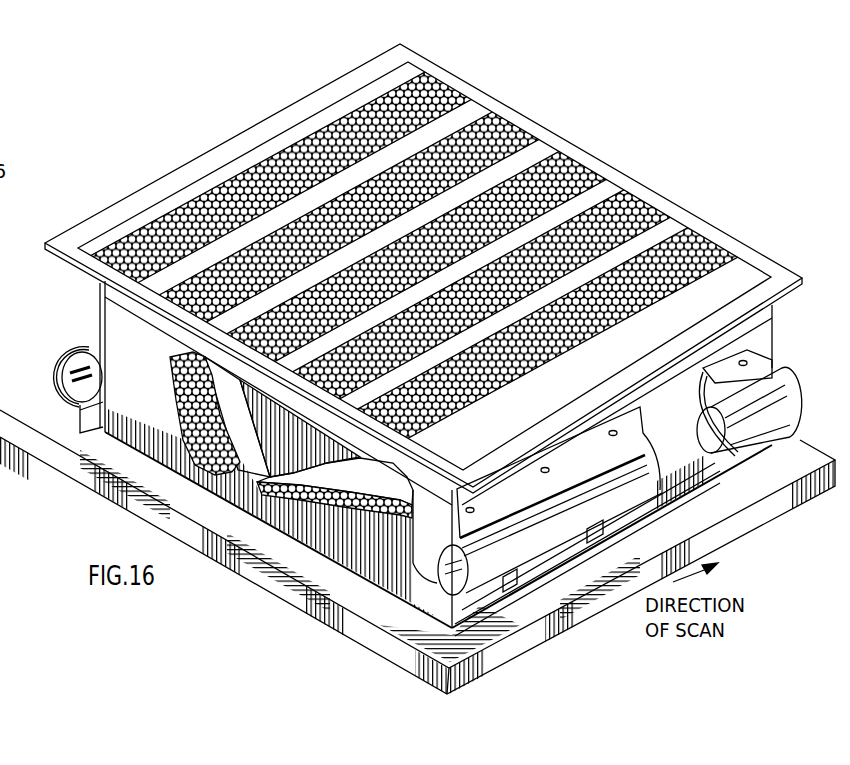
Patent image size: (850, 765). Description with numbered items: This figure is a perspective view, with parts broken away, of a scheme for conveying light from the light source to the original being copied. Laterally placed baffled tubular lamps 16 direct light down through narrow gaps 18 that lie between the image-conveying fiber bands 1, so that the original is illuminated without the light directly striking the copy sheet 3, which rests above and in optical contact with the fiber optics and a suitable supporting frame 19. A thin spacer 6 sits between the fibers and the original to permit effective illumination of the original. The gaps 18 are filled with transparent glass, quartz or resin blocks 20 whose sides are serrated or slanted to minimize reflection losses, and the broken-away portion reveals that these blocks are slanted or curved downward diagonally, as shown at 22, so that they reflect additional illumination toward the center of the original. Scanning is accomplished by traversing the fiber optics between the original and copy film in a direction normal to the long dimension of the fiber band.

The fiber bands 1 is at (577, 182).
The copy sheet 3 is at (393, 77).
The thin spacer 6 is at (602, 547).
The baffled tubular lamps 16 is at (62, 392).
The gaps 18 is at (438, 152).
The supporting frame 19 is at (265, 130).
The blocks 20 is at (510, 580).
The slanted blocks 22 is at (248, 198).